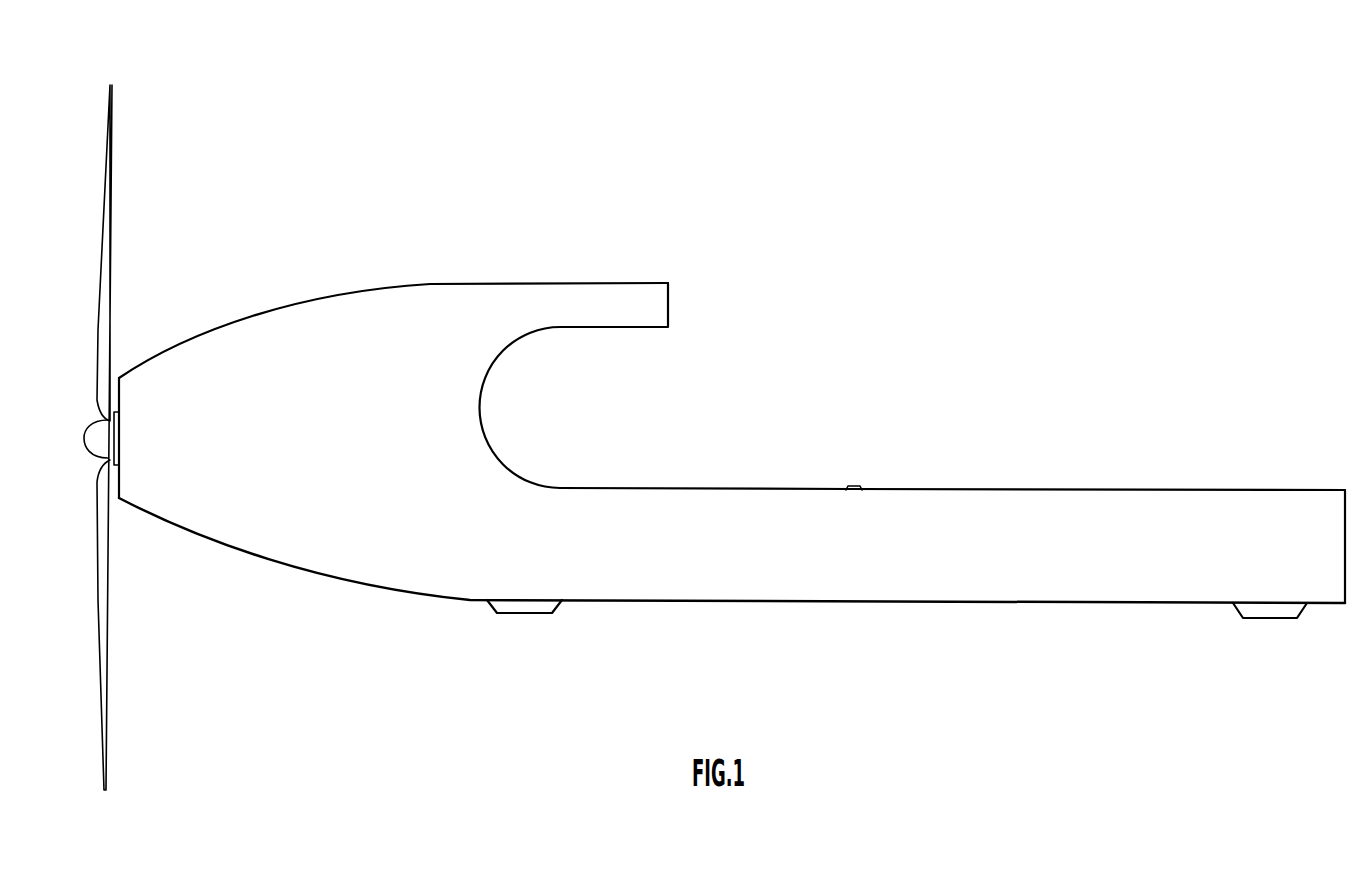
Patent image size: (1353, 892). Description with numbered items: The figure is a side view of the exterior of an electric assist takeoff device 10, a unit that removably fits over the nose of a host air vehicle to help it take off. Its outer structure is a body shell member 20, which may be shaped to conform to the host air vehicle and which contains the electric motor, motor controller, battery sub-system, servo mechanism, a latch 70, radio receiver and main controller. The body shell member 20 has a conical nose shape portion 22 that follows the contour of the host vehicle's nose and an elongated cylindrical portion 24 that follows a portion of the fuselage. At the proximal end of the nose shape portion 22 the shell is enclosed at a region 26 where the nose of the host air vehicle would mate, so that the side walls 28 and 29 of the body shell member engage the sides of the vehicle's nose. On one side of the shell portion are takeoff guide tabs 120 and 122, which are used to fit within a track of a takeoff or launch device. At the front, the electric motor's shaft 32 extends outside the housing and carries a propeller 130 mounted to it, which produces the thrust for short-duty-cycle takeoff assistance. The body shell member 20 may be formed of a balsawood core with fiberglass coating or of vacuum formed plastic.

The electric assist takeoff device 10 is at (903, 257).
The body shell member 20 is at (288, 575).
The conical nose shape portion 22 is at (668, 187).
The elongated cylindrical portion 24 is at (1345, 397).
The enclosed proximal portion of nose shaped portion 26 is at (485, 427).
The side wall 28 is at (635, 328).
The side wall 29 is at (604, 488).
The shaft 32 is at (108, 421).
The latch 70 is at (850, 487).
The takeoff guide tab 120 is at (523, 613).
The takeoff guide tab 122 is at (1270, 618).
The propeller 130 is at (107, 653).